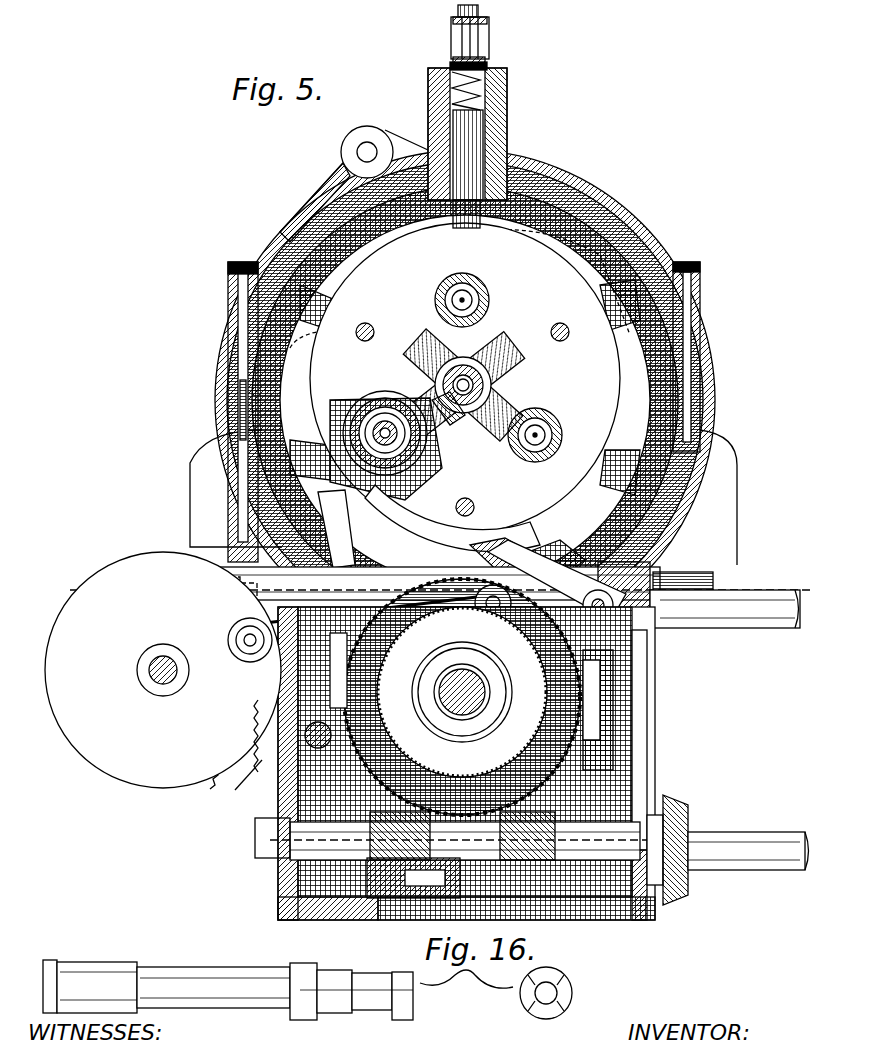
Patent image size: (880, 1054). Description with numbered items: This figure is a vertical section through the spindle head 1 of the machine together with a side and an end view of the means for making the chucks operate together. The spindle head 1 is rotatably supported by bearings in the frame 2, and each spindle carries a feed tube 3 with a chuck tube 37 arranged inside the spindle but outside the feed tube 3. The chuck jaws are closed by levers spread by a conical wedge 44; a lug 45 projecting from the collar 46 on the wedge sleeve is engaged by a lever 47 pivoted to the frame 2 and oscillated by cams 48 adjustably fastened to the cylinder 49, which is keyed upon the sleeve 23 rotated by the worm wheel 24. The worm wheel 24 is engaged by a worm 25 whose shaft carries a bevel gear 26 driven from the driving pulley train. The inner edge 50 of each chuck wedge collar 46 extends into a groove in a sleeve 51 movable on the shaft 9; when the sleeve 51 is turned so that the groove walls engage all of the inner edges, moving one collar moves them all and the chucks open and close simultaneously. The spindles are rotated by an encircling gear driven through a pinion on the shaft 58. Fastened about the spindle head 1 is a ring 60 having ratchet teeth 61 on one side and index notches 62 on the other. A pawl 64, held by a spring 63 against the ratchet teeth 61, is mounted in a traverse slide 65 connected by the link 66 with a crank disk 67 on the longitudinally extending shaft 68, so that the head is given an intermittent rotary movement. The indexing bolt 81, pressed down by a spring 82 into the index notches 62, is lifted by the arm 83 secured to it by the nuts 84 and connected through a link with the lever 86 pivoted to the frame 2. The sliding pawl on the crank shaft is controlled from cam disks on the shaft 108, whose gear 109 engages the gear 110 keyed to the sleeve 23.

In FIG. 5, the spindle head 1 is at (518, 372).
In FIG. 5, the frame 2 is at (640, 245).
In FIG. 5, the feed tube 3 is at (474, 293).
In FIG. 5, the shaft 9 is at (470, 364).
In FIG. 5, the sleeve 23 is at (464, 710).
In FIG. 5, the worm wheel 24 is at (600, 762).
In FIG. 5, the worm 25 is at (395, 905).
In FIG. 5, the bevel gear 26 is at (690, 835).
In FIG. 5, the chuck tube 37 is at (492, 306).
In FIG. 5, the conical wedge 44 is at (386, 419).
In FIG. 5, the lug 45 is at (265, 483).
In FIG. 5, the collar 46 is at (360, 400).
In FIG. 5, the lever 47 is at (300, 535).
In FIG. 5, the cams 48 is at (262, 718).
In FIG. 5, the cylinder 49 is at (462, 692).
In FIG. 5, the inner edge 50 is at (459, 431).
In FIG. 5, the sleeve 51 is at (475, 434).
In FIG. 16, the sleeve 51 is at (318, 1016).
In FIG. 5, the shaft 58 is at (464, 682).
In FIG. 5, the ring 60 is at (465, 378).
In FIG. 5, the ratchet teeth 61 is at (497, 548).
In FIG. 5, the index notches 62 is at (460, 228).
In FIG. 5, the spring 63 is at (457, 590).
In FIG. 5, the pawl 64 is at (548, 548).
In FIG. 5, the traverse slide 65 is at (740, 628).
In FIG. 5, the link 66 is at (260, 665).
In FIG. 5, the crank disk 67 is at (163, 670).
In FIG. 5, the shaft 68 is at (158, 655).
In FIG. 5, the indexing bolt 81 is at (522, 172).
In FIG. 5, the spring 82 is at (507, 92).
In FIG. 5, the arm 83 is at (451, 38).
In FIG. 5, the nuts 84 is at (488, 60).
In FIG. 5, the lever 86 is at (398, 135).
In FIG. 5, the shaft 108 is at (252, 780).
In FIG. 5, the gear 109 is at (248, 805).
In FIG. 5, the gear 110 is at (600, 690).